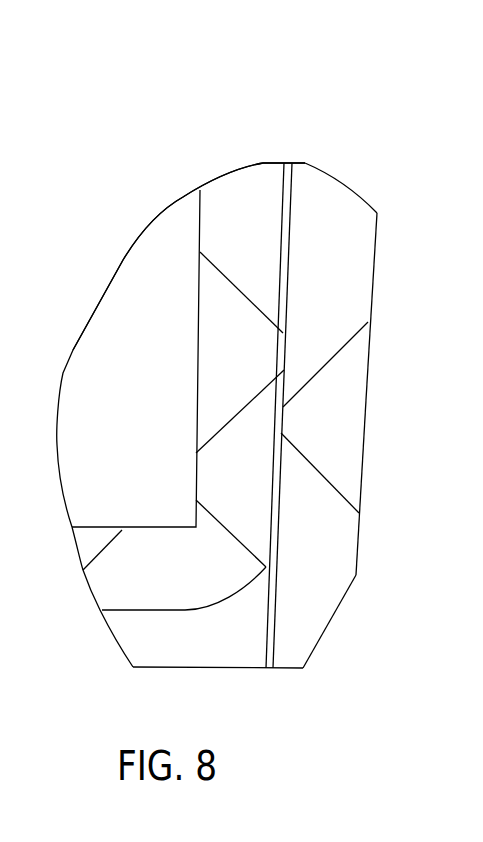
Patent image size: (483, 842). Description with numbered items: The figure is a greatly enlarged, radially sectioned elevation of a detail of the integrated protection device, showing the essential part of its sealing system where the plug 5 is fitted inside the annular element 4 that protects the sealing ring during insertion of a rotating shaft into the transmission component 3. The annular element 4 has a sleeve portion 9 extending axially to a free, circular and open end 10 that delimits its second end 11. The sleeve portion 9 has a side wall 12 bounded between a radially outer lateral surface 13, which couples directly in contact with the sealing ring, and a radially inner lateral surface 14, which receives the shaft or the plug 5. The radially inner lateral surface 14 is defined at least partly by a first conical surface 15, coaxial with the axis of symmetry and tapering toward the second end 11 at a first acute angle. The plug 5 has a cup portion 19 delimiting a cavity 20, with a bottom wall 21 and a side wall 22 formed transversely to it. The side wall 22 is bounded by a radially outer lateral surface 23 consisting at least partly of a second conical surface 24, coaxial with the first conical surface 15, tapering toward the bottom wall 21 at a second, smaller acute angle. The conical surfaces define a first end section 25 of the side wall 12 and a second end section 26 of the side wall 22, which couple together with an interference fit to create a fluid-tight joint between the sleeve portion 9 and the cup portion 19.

The transmission component 3 is at (270, 421).
The annular element 4 is at (338, 209).
The plug 5 is at (256, 207).
The sleeve portion 9 is at (350, 268).
The free, circular and open end 10 is at (264, 640).
The second end 11 is at (325, 675).
The side wall 12 is at (333, 302).
The radially outer lateral surface 13 is at (372, 357).
The radially inner lateral surface 14 is at (284, 305).
The first conical surface 15 is at (290, 225).
The cup portion 19 is at (222, 391).
The cavity 20 is at (172, 237).
The bottom wall 21 is at (112, 570).
The side wall 22 is at (232, 357).
The radially outer lateral surface 23 is at (292, 380).
The second conical surface 24 is at (291, 188).
The first end section 25 is at (286, 461).
The second end section 26 is at (274, 435).